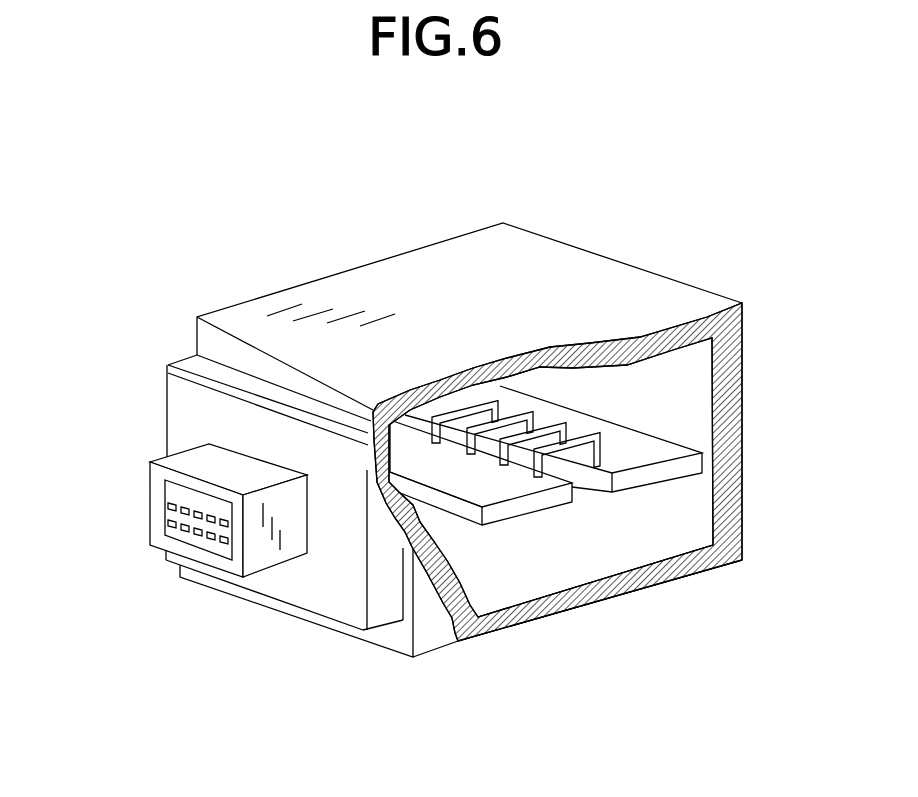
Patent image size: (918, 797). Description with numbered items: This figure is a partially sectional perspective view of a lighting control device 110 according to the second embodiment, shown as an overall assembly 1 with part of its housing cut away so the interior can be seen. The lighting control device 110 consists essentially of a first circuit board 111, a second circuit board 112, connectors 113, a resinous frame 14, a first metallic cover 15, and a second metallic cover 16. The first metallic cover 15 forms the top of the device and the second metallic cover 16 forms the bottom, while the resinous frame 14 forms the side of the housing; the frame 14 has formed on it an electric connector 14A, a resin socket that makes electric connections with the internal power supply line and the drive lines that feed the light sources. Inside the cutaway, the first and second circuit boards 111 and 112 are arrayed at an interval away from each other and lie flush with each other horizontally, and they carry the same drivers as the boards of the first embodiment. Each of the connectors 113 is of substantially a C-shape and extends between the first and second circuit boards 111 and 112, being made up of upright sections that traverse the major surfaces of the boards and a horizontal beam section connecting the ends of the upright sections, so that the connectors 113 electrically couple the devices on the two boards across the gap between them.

The electronic device 1 is at (261, 185).
The lighting control device 110 is at (403, 230).
The first metallic cover 15 is at (571, 268).
The resinous frame 14 is at (178, 394).
The electric connector 14A is at (155, 502).
The first circuit board 111 is at (500, 518).
The second circuit board 112 is at (645, 482).
The connectors 113 is at (459, 398).
The second metallic cover 16 is at (571, 608).